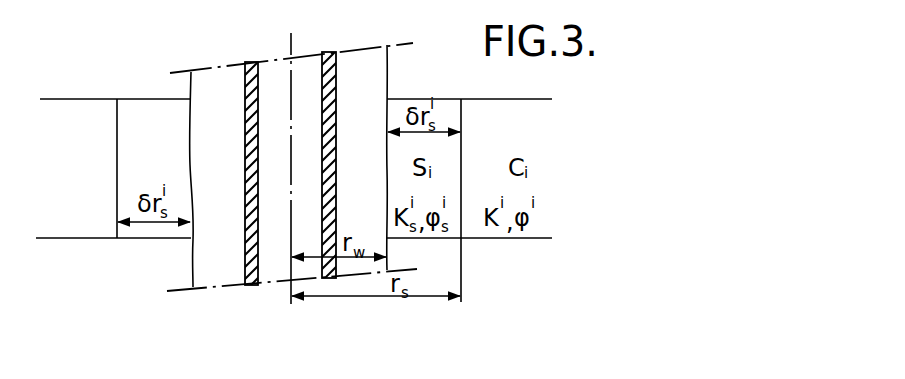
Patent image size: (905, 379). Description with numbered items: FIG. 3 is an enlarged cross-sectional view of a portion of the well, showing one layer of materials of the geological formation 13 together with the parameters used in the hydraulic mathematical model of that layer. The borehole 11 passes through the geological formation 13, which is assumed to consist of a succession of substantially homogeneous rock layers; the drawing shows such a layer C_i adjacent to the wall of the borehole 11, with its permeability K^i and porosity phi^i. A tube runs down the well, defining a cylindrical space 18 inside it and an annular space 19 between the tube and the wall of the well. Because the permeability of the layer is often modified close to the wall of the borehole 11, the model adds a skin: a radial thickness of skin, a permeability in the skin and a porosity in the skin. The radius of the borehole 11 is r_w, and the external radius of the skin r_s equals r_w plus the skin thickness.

The borehole 11 is at (191, 128).
The geological formation 13 is at (86, 177).
The cylindrical space 18 is at (279, 255).
The annular space 19 is at (222, 254).